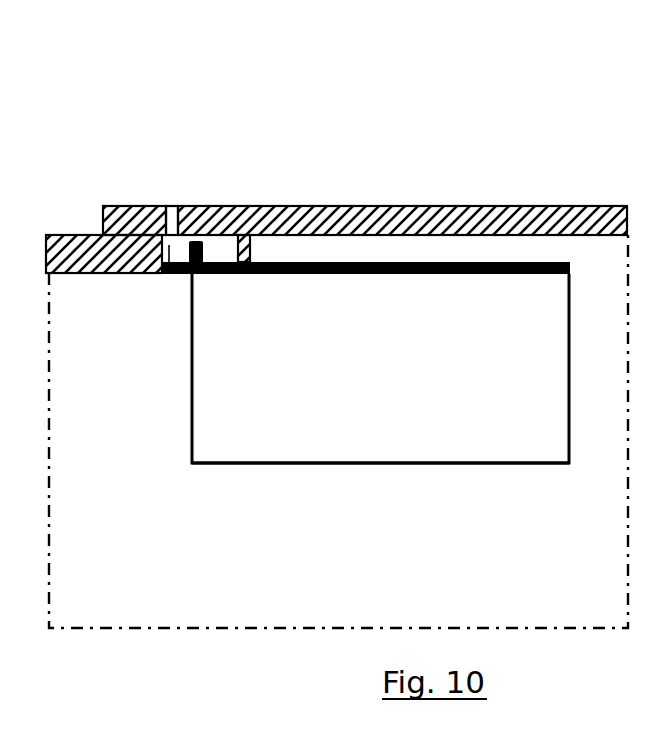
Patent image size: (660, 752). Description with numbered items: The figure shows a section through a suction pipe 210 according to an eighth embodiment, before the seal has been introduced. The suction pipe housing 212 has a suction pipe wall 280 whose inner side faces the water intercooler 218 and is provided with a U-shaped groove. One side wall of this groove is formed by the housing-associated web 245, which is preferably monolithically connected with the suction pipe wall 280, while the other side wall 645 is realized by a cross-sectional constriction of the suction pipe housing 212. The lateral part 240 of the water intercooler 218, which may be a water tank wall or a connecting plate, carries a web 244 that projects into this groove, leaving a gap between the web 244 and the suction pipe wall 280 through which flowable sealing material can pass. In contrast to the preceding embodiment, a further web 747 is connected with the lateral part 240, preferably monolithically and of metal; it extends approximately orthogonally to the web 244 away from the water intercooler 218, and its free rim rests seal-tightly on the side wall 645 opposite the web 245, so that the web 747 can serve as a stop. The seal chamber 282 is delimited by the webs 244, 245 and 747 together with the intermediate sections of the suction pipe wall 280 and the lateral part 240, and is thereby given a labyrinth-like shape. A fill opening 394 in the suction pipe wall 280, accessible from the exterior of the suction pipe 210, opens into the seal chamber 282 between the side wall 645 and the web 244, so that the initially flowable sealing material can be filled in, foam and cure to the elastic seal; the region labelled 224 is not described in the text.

The suction pipe 210 is at (243, 111).
The suction pipe housing 212 is at (555, 201).
The suction pipe wall 280 is at (430, 210).
The fill opening 394 is at (173, 220).
The side wall of the groove 645 is at (162, 252).
The seal chamber 282 is at (168, 276).
The further web 747 is at (169, 246).
The web 244 is at (204, 246).
The housing-associated web 245 is at (252, 247).
The lateral part 240 is at (542, 276).
The cavity / chamber 224 is at (540, 442).
The water intercooler 218 is at (515, 466).